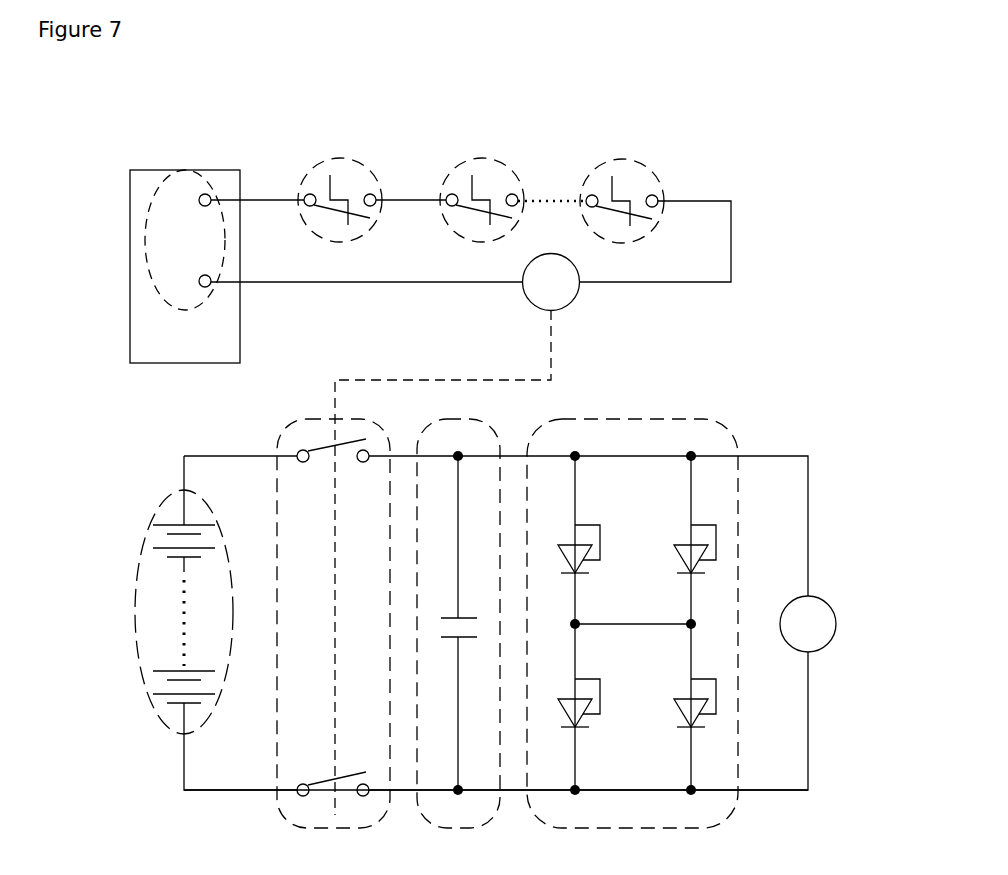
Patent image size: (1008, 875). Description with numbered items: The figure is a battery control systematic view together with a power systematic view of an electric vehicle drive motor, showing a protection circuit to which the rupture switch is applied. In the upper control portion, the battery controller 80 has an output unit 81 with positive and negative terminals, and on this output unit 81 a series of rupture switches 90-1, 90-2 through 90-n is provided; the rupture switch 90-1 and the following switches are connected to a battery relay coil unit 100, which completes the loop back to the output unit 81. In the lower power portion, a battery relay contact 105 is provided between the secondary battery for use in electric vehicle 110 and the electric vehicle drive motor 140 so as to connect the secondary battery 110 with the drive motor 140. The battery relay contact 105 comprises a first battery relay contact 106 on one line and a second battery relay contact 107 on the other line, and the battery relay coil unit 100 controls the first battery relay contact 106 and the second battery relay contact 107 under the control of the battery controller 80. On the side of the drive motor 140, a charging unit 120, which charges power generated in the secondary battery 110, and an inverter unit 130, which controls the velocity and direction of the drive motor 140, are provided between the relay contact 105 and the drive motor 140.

The battery controller 80 is at (153, 170).
The output unit 81 is at (200, 175).
The rupture switch 90-1 is at (345, 158).
The rupture switch 90-2 is at (487, 158).
The rupture switch 90-n is at (622, 158).
The battery relay coil unit 100 is at (573, 300).
The battery relay contact 105 is at (288, 430).
The first battery relay contact 106 is at (340, 440).
The second battery relay contact 107 is at (338, 783).
The secondary battery for use in electric vehicle 110 is at (135, 612).
The charging unit 120 is at (493, 425).
The inverter unit 130 is at (728, 430).
The electric vehicle drive motor 140 is at (837, 622).